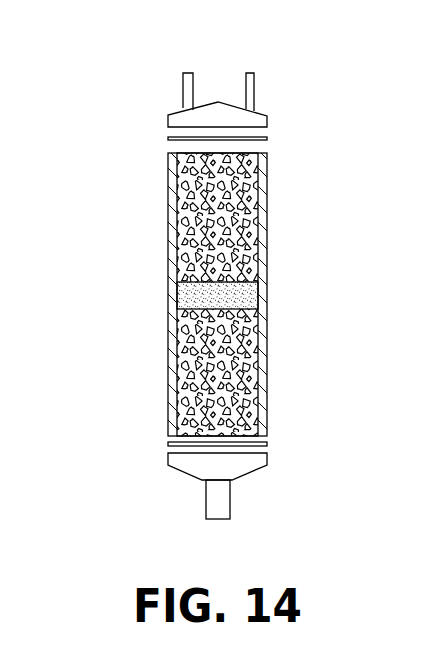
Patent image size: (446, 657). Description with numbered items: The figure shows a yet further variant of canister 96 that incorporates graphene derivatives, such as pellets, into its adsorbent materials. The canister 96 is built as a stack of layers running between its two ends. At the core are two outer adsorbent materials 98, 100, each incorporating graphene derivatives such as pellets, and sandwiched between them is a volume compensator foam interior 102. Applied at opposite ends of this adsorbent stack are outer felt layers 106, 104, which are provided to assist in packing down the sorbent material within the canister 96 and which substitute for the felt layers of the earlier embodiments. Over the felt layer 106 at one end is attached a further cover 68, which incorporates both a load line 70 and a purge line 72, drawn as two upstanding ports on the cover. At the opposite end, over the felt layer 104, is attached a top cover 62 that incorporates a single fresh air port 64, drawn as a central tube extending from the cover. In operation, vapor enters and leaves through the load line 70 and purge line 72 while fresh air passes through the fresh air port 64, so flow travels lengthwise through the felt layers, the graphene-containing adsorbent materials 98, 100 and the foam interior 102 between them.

The canister 96 is at (115, 222).
The outer adsorbent material 98 is at (177, 193).
The volume compensator foam interior 102 is at (177, 297).
The outer adsorbent material 100 is at (177, 382).
The further cover 68 is at (168, 122).
The load line 70 is at (190, 72).
The purge line 72 is at (250, 73).
The outer felt layer 106 is at (267, 139).
The outer felt layer 104 is at (168, 447).
The top cover 62 is at (268, 459).
The fresh air port 64 is at (218, 519).